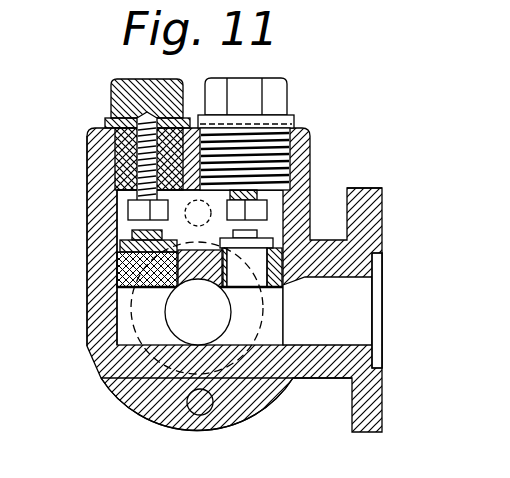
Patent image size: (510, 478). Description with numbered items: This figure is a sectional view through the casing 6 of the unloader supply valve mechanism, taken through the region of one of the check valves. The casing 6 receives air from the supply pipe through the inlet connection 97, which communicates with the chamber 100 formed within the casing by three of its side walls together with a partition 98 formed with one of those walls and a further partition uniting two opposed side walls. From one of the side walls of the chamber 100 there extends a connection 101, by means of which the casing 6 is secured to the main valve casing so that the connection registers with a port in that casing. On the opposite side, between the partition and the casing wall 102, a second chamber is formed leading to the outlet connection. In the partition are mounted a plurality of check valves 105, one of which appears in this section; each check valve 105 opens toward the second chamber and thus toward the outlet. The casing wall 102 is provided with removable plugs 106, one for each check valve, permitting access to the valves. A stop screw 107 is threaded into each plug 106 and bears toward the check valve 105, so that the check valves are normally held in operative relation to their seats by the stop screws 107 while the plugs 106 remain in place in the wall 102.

The casing 6 is at (305, 150).
The inlet connection 97 is at (197, 287).
The partition 98 is at (198, 312).
The chamber 100 is at (80, 241).
The connection 101 is at (365, 298).
The casing wall 102 is at (292, 128).
The check valve 105 is at (140, 268).
The removable plug 106 is at (112, 81).
The stop screw 107 is at (133, 152).